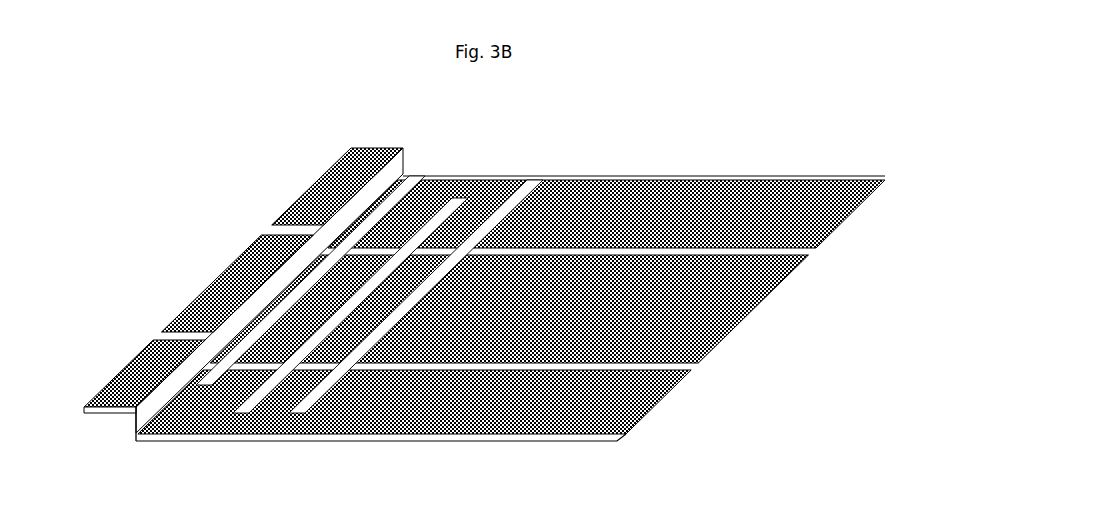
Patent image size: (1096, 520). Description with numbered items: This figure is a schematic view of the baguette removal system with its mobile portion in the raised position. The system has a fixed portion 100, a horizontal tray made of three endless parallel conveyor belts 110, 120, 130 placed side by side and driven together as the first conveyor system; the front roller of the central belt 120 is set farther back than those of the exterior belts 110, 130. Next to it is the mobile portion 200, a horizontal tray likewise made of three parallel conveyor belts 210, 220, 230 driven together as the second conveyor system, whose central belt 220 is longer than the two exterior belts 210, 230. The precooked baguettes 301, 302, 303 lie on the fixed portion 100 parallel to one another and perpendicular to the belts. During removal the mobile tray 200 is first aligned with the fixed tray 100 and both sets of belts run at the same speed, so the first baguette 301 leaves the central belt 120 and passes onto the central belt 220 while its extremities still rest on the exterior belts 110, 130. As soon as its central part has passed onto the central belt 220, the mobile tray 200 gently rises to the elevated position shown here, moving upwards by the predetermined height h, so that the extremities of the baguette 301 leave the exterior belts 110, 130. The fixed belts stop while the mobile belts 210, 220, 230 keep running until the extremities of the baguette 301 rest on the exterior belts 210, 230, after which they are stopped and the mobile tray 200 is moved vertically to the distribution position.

The fixed portion 100 is at (510, 254).
The conveyor belt 110 is at (638, 200).
The central belt 120 is at (648, 305).
The conveyor belt 130 is at (585, 408).
The mobile portion 200 is at (243, 255).
The conveyor belt 210 is at (322, 183).
The central belt 220 is at (210, 290).
The conveyor belt 230 is at (142, 380).
The precooked baguette 301 is at (310, 262).
The precooked baguette 302 is at (457, 200).
The precooked baguette 303 is at (500, 212).
The predetermined height h is at (133, 420).